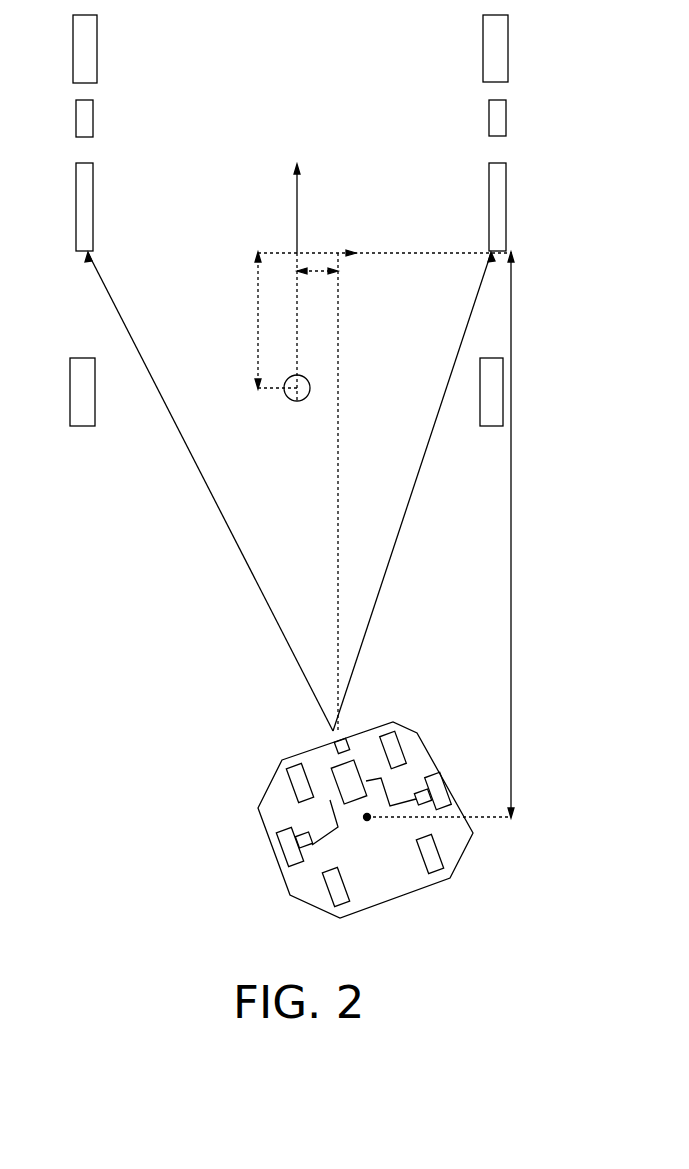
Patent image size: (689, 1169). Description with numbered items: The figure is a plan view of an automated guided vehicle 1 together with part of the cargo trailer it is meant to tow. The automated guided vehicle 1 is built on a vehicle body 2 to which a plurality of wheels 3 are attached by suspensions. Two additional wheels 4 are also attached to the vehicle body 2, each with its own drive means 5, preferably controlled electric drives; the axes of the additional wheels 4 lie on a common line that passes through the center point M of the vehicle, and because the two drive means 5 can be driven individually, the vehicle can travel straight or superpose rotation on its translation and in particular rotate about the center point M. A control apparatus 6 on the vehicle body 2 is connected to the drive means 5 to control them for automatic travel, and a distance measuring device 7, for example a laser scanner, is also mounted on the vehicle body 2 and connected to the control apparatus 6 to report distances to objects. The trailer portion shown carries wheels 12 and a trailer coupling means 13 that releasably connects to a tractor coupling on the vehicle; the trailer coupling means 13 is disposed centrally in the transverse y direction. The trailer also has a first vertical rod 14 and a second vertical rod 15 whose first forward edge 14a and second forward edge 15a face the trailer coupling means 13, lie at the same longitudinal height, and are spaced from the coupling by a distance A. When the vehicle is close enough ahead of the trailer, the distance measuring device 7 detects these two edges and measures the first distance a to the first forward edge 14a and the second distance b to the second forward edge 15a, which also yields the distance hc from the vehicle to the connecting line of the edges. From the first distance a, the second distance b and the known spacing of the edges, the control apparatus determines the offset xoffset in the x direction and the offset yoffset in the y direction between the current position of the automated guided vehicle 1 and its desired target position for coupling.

The automated guided vehicle 1 is at (141, 809).
The vehicle body 2 is at (372, 902).
The wheels 3 is at (403, 723).
The additional wheels 4 is at (433, 796).
The drive means 5 is at (404, 742).
The control apparatus 6 is at (345, 778).
The distance measuring device 7 is at (333, 745).
The wheels 12 is at (90, 42).
The trailer coupling means 13 is at (297, 401).
The first vertical rod 14 is at (88, 115).
The first forward edge 14a is at (84, 257).
The second vertical rod 15 is at (492, 117).
The second forward edge 15a is at (498, 257).
The center point M is at (369, 820).
The first distance a is at (212, 521).
The second distance b is at (459, 351).
The x direction x is at (296, 203).
The y direction y is at (330, 252).
The distance A is at (257, 322).
The y offset yoffset is at (318, 273).
The distance hc is at (336, 524).
The x offset xoffset is at (510, 612).